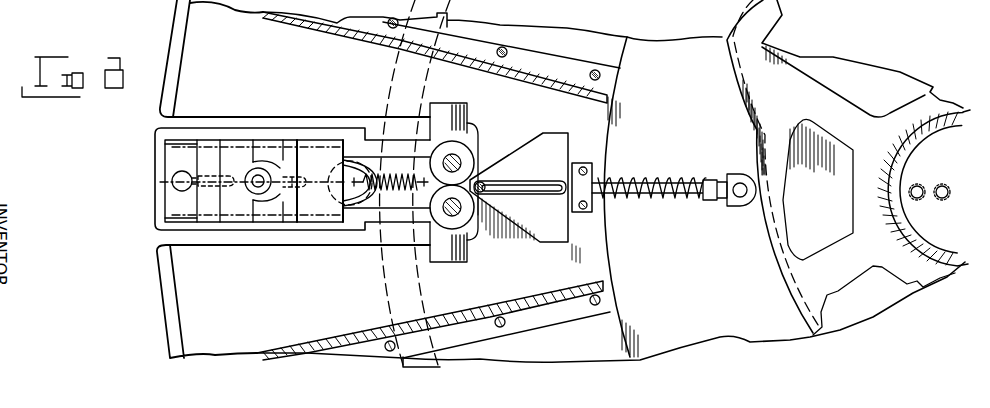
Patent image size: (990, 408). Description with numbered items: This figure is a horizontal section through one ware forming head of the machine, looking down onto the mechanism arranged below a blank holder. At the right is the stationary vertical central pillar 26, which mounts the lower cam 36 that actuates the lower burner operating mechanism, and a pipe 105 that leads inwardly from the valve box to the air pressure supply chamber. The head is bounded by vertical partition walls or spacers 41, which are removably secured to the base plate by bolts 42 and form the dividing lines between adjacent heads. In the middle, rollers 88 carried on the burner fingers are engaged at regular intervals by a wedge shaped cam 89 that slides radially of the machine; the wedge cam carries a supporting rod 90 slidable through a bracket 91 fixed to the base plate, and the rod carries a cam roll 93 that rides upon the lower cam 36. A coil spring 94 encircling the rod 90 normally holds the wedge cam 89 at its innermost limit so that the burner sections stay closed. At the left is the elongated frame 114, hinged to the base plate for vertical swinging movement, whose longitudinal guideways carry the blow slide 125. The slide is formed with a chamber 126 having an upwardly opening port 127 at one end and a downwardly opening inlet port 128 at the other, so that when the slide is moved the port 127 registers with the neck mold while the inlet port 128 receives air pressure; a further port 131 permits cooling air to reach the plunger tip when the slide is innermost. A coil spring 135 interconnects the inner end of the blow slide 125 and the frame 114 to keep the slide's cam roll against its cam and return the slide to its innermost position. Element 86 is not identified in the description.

The vertical central pillar 26 is at (923, 137).
The lower cam 36 is at (744, 67).
The vertical partition walls or spacers 41 is at (346, 37).
The bolts 42 is at (572, 62).
The pin 86 is at (920, 200).
The rollers 88 is at (470, 155).
The wedge shaped cams 89 is at (552, 137).
The supporting rods 90 is at (650, 178).
The brackets 91 is at (592, 213).
The cam rolls 93 is at (738, 176).
The coil springs 94 is at (614, 182).
The pipe 105 is at (939, 184).
The elongated frame 114 is at (144, 197).
The blow slide 125 is at (200, 160).
The chamber 126 is at (293, 190).
The upwardly opening port 127 is at (256, 194).
The downwardly opening inlet port 128 is at (320, 181).
The port 131 is at (208, 190).
The coil spring 135 is at (400, 192).